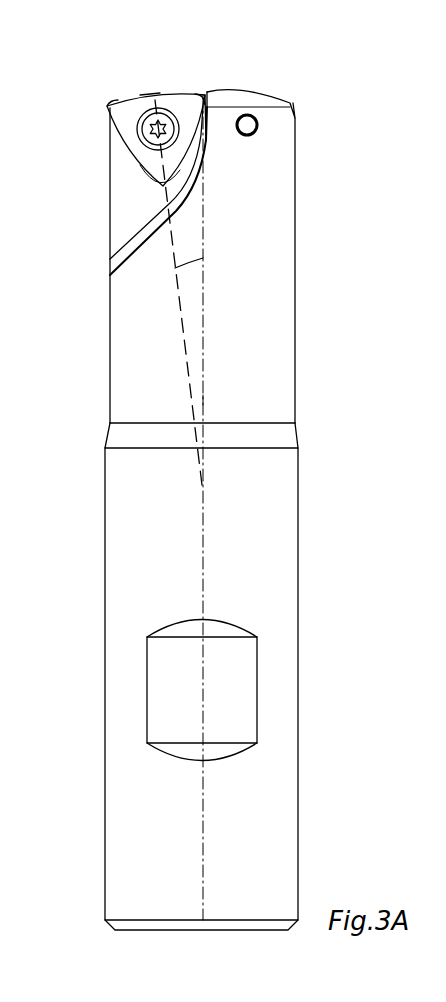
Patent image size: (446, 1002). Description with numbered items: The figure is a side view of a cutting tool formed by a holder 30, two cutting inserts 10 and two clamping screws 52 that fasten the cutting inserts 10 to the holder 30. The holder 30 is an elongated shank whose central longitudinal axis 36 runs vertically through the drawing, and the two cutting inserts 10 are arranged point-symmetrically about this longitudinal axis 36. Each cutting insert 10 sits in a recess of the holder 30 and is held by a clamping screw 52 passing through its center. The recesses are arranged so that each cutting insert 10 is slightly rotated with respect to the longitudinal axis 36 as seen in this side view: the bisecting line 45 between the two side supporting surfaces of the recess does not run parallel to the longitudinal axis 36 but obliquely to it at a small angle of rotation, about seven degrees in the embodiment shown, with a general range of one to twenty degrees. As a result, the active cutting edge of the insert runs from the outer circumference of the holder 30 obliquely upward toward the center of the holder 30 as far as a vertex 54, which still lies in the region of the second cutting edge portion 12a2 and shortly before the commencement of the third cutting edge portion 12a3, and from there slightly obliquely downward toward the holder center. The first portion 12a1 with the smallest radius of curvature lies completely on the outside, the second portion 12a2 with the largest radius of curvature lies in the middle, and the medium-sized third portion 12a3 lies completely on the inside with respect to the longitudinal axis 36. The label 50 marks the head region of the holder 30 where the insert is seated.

The cutting insert 10 is at (105, 118).
The first portion of cutting edge 12a1 is at (108, 100).
The second portion of cutting edge 12a2 is at (152, 93).
The third portion of cutting edge 12a3 is at (187, 87).
The holder 30 is at (296, 323).
The longitudinal axis 36 is at (203, 400).
The bisecting line 45 is at (180, 318).
The insert seat head 50 is at (327, 97).
The clamping screw 52 is at (143, 140).
The vertex 54 is at (170, 92).